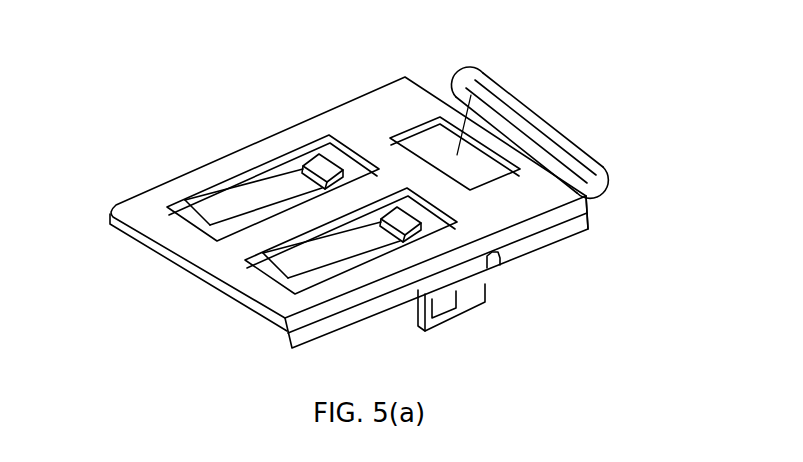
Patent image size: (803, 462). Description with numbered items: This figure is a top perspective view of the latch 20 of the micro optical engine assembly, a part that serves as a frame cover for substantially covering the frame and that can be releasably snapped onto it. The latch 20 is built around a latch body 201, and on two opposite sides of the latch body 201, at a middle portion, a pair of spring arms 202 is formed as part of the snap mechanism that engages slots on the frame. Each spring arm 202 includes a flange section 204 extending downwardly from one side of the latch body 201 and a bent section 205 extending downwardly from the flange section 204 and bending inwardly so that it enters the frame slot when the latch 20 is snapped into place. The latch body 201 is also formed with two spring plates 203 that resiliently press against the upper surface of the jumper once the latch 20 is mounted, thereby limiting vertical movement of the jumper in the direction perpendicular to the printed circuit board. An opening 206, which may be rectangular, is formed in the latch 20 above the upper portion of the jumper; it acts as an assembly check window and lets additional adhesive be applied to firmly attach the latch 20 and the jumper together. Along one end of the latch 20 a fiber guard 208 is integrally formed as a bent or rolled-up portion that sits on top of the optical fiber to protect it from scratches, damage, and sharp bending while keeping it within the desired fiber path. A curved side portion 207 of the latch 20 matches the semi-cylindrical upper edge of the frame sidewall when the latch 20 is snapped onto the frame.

The latch 20 is at (183, 177).
The latch body 201 is at (397, 103).
The spring arm 202 is at (300, 158).
The spring plate 203 is at (298, 183).
The flange section 204 is at (487, 278).
The bent section 205 is at (487, 298).
The opening 206 is at (483, 80).
The curved side portion 207 is at (588, 200).
The fiber guard 208 is at (553, 137).